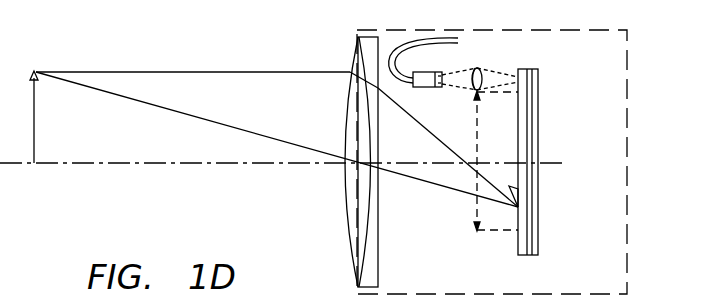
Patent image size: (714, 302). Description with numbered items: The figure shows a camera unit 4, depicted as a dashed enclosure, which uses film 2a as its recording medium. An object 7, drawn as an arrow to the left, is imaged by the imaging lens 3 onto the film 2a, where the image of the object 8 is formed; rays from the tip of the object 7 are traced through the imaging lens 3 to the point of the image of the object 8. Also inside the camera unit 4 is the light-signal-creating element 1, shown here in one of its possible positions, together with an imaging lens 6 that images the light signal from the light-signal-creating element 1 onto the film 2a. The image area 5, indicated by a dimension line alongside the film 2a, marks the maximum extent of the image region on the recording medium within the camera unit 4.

The light-signal-creating element 1 is at (428, 71).
The film 2a is at (539, 126).
The imaging lens 3 is at (349, 232).
The camera unit 4 is at (628, 220).
The image area 5 is at (471, 208).
The imaging lens for the light-signal-creating element 6 is at (488, 68).
The object 7 is at (35, 128).
The image of the object 8 is at (519, 180).